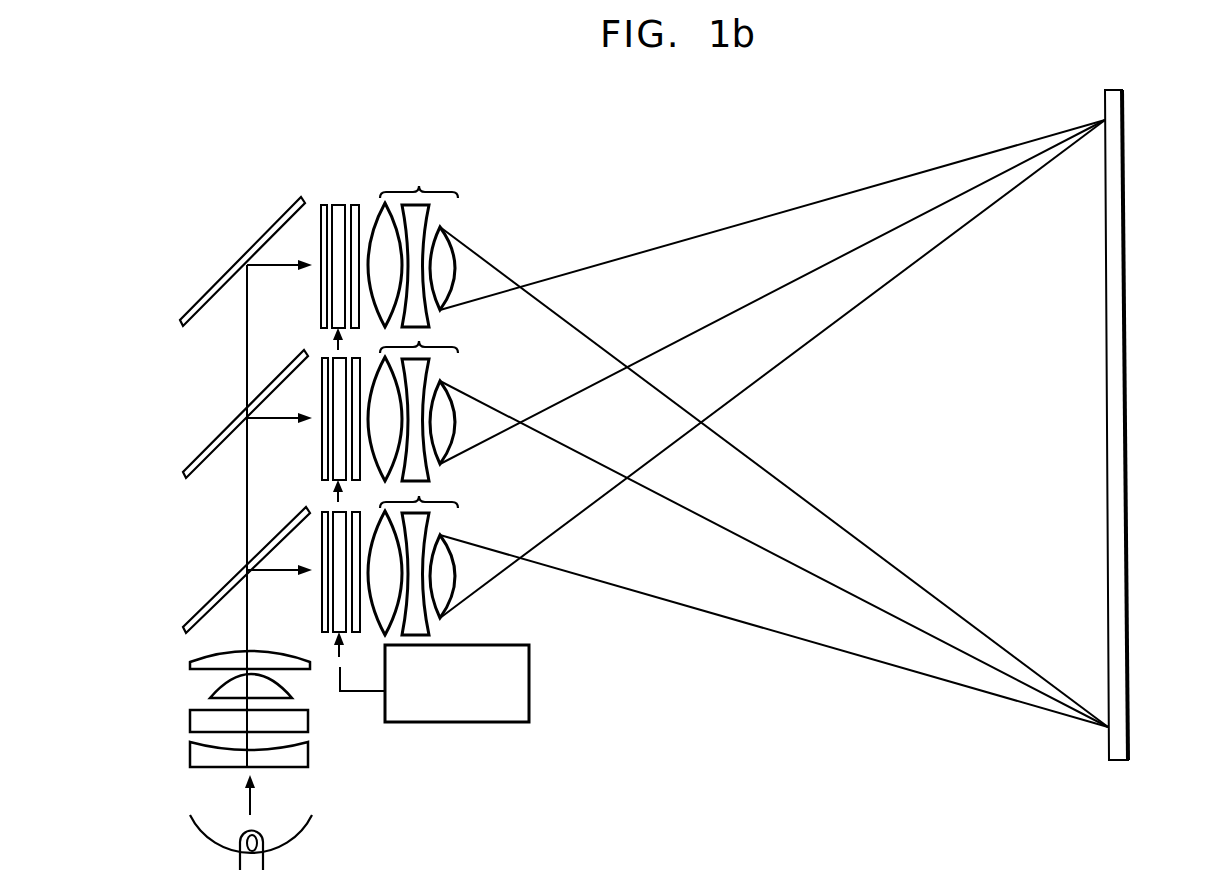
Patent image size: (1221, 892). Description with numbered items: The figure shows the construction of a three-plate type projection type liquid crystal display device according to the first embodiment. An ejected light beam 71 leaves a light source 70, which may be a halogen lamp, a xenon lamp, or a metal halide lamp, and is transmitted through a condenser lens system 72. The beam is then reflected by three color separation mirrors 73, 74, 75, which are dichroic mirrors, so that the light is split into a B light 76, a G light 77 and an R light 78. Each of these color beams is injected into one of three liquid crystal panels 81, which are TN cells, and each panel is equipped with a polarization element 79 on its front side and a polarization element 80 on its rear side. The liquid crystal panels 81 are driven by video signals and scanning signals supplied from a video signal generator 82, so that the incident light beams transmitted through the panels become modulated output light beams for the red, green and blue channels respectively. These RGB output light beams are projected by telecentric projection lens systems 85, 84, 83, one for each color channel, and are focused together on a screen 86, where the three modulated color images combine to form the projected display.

The light source 70 is at (303, 821).
The ejected light beam 71 is at (253, 800).
The condenser lens system 72 is at (172, 658).
The color separation mirror 73 is at (218, 587).
The color separation mirror 74 is at (220, 436).
The color separation mirror 75 is at (224, 276).
The B light 76 is at (273, 576).
The G light 77 is at (273, 424).
The R light 78 is at (273, 271).
The polarization element 79 is at (323, 205).
The polarization element 80 is at (354, 205).
The liquid crystal panel 81 is at (338, 205).
The video signal generator 82 is at (529, 690).
The telecentric projection lens system 83 is at (412, 502).
The telecentric projection lens system 84 is at (412, 347).
The telecentric projection lens system 85 is at (738, 423).
The screen 86 is at (1123, 177).